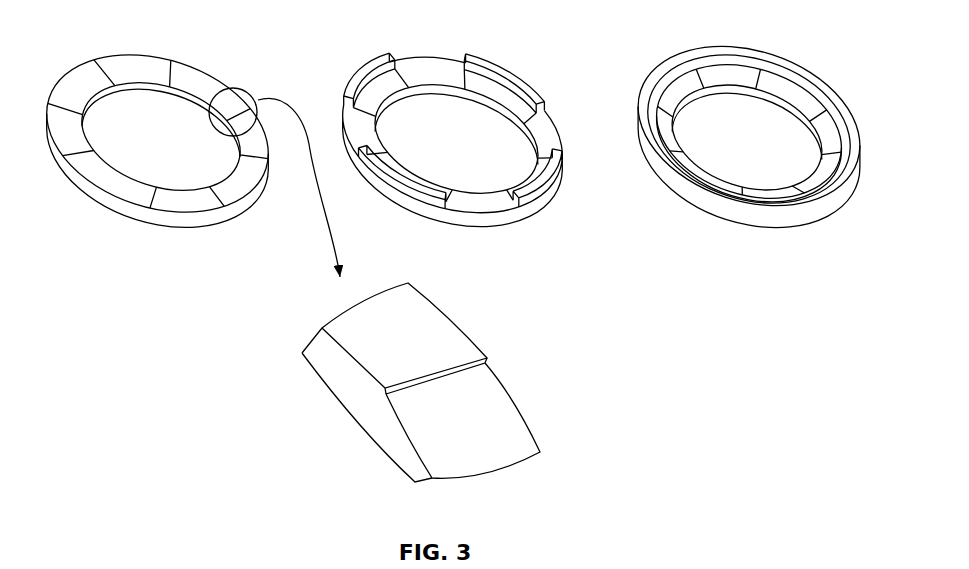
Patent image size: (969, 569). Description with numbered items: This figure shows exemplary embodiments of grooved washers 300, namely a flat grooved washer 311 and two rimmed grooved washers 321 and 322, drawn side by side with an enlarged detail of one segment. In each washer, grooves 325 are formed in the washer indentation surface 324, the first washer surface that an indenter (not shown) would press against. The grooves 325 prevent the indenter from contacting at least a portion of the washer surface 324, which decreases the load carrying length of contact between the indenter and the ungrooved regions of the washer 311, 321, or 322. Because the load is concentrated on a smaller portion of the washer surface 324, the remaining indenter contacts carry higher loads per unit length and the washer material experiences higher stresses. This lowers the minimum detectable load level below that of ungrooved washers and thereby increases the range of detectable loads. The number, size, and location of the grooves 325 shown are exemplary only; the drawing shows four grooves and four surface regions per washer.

The grooved washers 300 is at (174, 374).
The flat grooved washer 311 is at (98, 208).
The rimmed grooved washer 321 is at (552, 200).
The rimmed grooved washer 322 is at (755, 227).
The washer indentation surface 324 is at (212, 78).
The grooves 325 is at (173, 217).